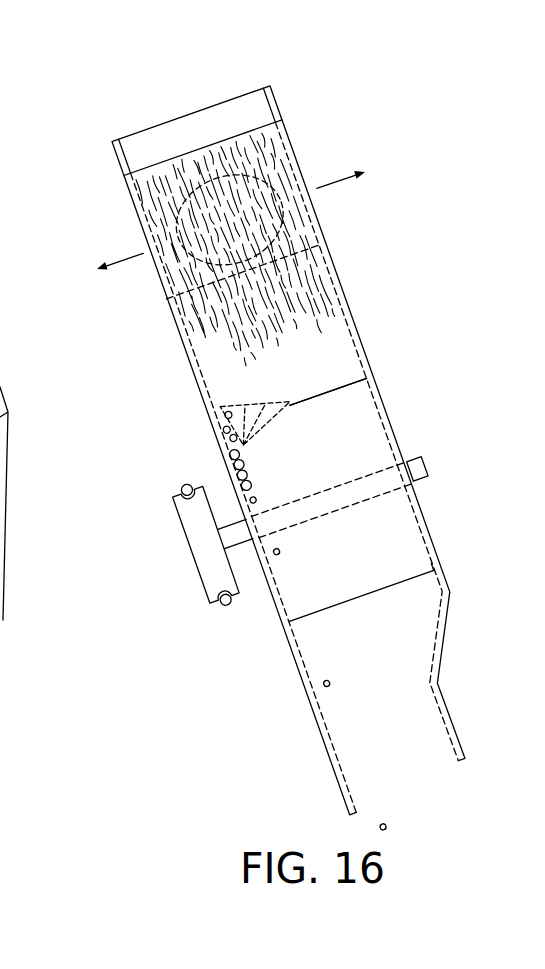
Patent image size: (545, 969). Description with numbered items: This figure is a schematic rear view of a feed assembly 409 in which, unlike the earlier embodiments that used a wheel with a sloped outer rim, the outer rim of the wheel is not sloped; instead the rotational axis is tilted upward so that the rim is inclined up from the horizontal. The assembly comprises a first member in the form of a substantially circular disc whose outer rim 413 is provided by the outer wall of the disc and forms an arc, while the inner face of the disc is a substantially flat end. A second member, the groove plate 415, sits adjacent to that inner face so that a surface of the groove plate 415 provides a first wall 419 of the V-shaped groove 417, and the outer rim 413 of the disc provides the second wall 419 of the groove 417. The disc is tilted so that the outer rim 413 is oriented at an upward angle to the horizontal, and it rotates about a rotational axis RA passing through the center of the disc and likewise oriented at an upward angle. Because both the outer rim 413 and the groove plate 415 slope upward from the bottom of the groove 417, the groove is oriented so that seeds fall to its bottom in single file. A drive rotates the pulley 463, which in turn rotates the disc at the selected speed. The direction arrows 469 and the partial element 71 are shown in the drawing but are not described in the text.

The feed assembly 409 is at (383, 231).
The groove plate 415 is at (200, 393).
The wall of the groove 419 is at (210, 425).
The outer rim 413 is at (387, 586).
The V-shaped groove 417 is at (242, 410).
The pulley 463 is at (190, 547).
The direction of reciprocation 469 is at (334, 178).
The rotational axis RA is at (430, 465).
The adjacent component 71 is at (7, 440).